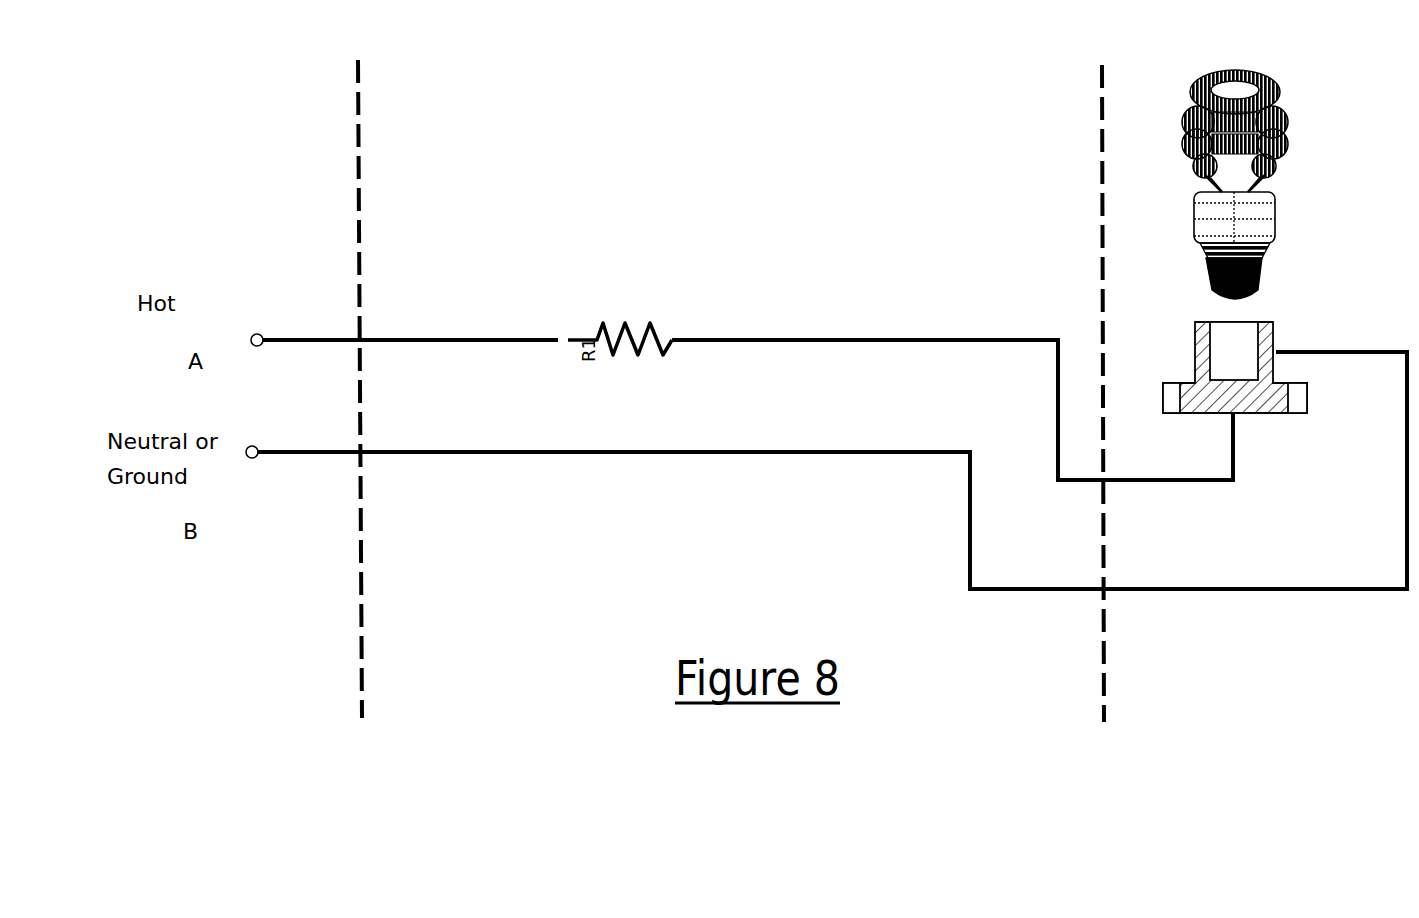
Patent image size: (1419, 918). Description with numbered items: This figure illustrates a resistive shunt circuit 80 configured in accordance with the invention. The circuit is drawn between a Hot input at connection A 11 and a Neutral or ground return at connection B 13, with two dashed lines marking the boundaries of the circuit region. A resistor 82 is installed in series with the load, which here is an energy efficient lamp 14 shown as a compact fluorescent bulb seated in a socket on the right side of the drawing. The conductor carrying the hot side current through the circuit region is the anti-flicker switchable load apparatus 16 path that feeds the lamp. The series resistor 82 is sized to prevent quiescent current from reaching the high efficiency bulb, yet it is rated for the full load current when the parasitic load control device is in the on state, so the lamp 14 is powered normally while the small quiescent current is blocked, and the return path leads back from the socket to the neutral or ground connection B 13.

The resistive shunt circuit 80 is at (832, 307).
The resistor 82 is at (620, 255).
The anti-flicker switchable load apparatus 16 is at (952, 318).
The energy efficient lamp 14 is at (1276, 248).
The Hot connection A 11 is at (248, 343).
The Neutral (or ground) connection B 13 is at (247, 463).